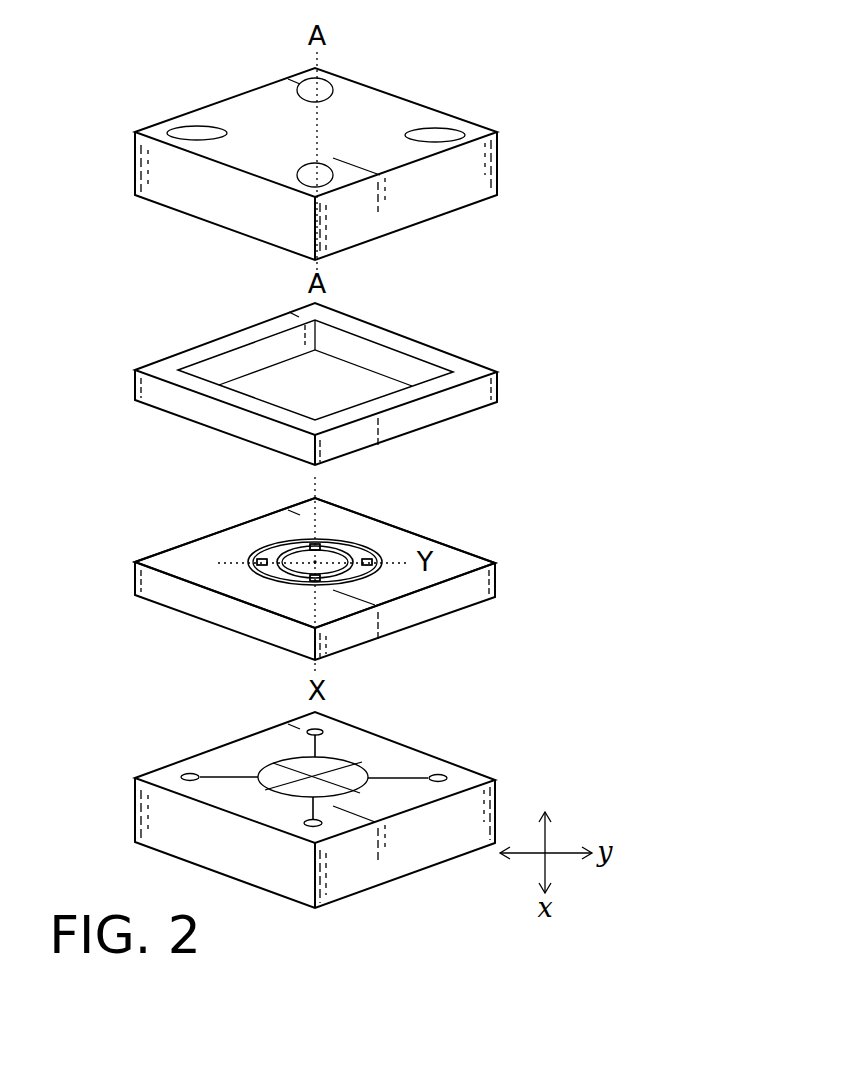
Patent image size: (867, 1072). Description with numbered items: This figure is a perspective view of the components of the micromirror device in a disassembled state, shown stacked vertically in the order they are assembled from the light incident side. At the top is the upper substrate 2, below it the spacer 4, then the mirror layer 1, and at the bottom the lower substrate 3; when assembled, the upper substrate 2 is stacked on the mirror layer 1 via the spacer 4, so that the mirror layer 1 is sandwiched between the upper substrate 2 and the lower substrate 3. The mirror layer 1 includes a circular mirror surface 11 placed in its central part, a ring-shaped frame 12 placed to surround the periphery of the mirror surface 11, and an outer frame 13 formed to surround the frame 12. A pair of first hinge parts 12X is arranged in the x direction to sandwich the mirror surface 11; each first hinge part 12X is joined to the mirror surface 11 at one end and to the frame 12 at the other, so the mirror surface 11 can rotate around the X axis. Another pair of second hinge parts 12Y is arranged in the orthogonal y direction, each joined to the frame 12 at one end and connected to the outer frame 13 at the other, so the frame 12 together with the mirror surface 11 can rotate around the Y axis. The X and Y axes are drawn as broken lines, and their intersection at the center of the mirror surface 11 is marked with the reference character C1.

The mirror layer 1 is at (487, 583).
The upper substrate 2 is at (483, 170).
The lower substrate 3 is at (350, 872).
The spacer 4 is at (420, 350).
The mirror surface 11 is at (330, 557).
The frame 12 is at (320, 585).
The first hinge parts 12X is at (317, 546).
The second hinge parts 12Y is at (263, 557).
The outer frame 13 is at (182, 562).
The center of the mirror surface C1 is at (315, 562).